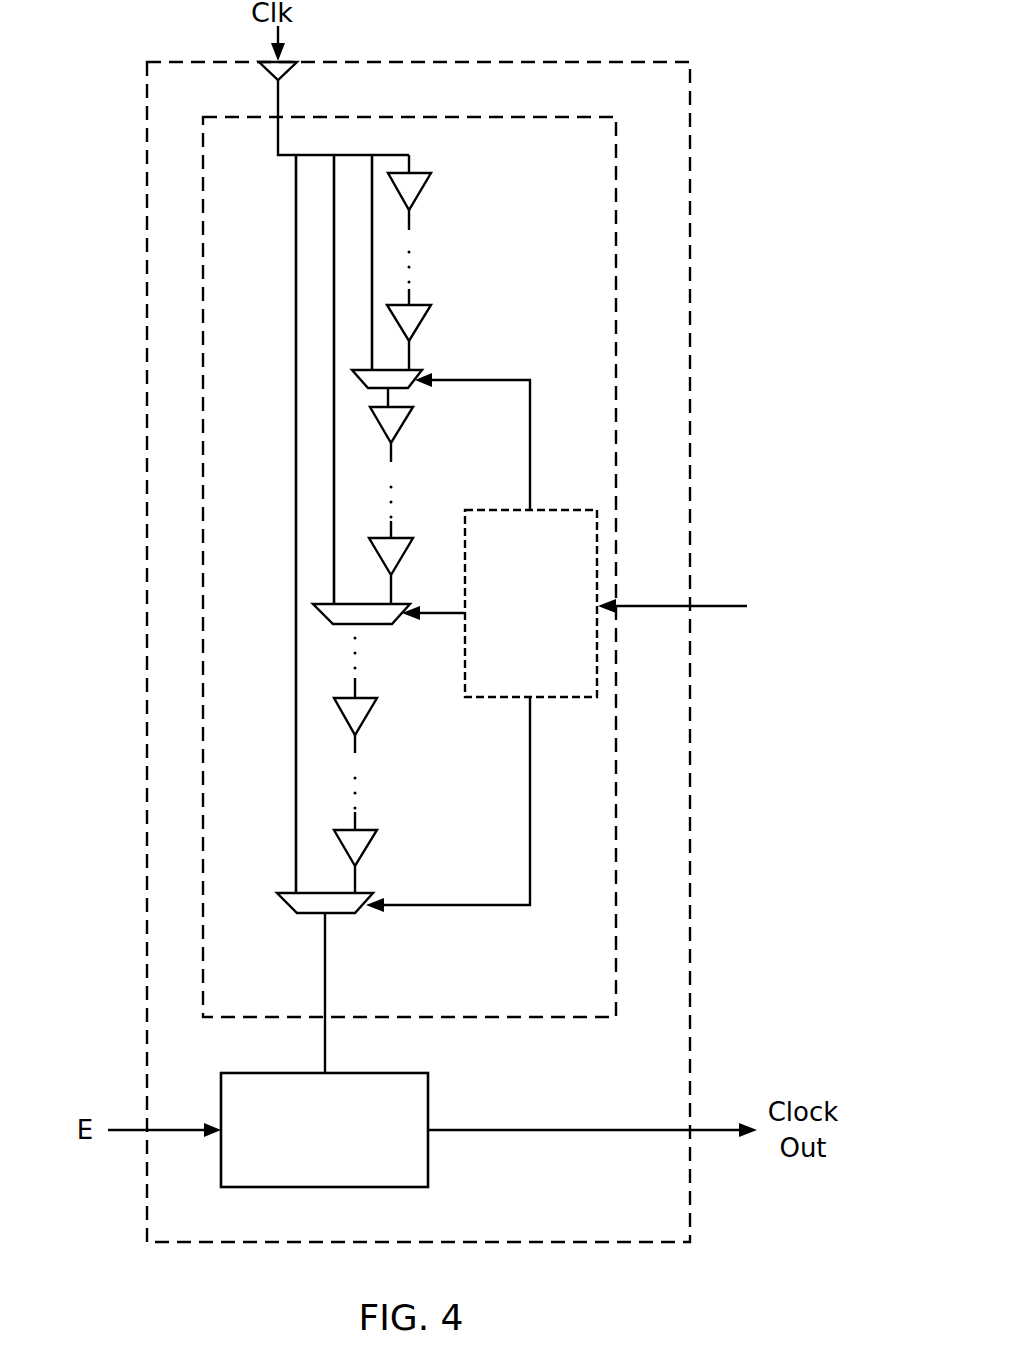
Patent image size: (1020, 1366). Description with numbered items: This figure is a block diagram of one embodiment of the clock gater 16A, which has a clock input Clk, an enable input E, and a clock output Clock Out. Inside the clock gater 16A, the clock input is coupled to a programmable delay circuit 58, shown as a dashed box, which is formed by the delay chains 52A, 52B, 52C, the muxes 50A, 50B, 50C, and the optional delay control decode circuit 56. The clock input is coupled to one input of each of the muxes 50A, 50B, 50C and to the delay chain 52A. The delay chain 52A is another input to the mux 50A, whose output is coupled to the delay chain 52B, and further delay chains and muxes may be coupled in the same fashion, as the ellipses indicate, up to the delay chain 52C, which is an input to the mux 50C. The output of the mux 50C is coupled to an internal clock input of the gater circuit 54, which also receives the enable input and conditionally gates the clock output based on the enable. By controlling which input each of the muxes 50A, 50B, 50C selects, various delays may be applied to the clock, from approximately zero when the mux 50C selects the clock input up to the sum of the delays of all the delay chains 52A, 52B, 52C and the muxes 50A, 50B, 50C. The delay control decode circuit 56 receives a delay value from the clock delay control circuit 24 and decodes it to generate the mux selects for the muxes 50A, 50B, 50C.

The clock gater 16A is at (683, 135).
The programmable delay circuit 58 is at (606, 191).
The delay chain 52A is at (438, 155).
The delay chain 52B is at (407, 393).
The delay chain 52C is at (378, 685).
The multiplexor 50A is at (474, 419).
The multiplexor 50B is at (389, 634).
The multiplexor 50C is at (403, 885).
The delay control decode circuit 56 is at (516, 670).
The gater circuit 54 is at (375, 1145).
The clock delay control circuit 24 is at (724, 606).